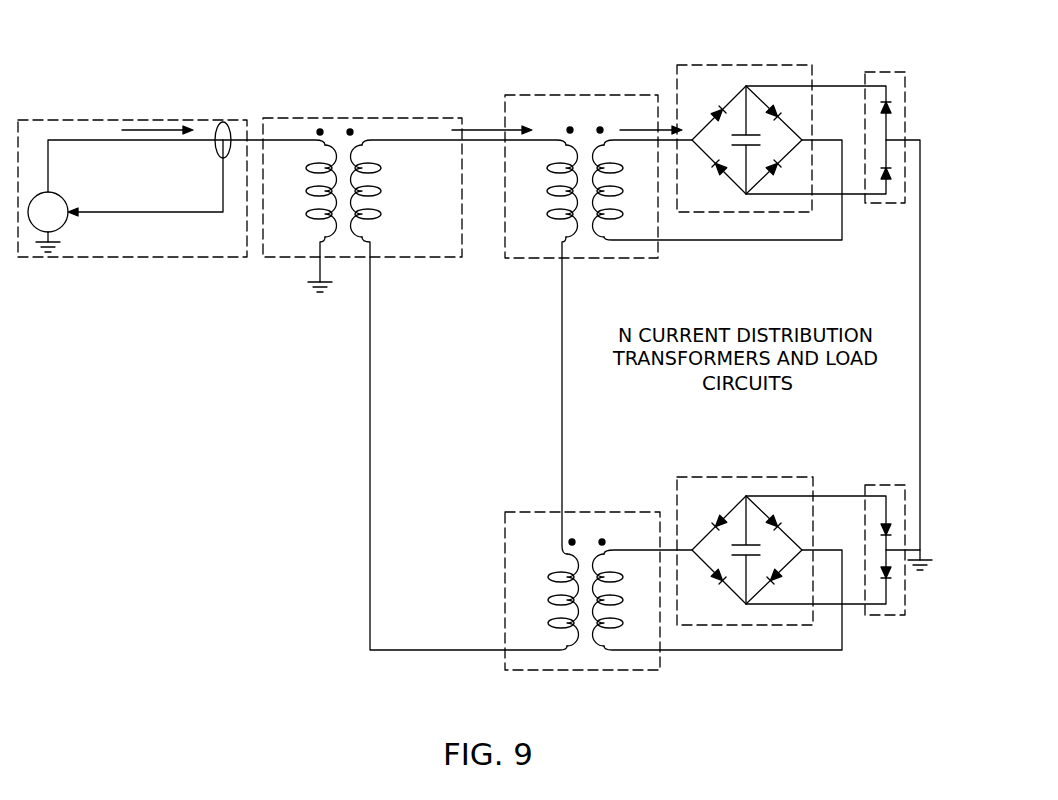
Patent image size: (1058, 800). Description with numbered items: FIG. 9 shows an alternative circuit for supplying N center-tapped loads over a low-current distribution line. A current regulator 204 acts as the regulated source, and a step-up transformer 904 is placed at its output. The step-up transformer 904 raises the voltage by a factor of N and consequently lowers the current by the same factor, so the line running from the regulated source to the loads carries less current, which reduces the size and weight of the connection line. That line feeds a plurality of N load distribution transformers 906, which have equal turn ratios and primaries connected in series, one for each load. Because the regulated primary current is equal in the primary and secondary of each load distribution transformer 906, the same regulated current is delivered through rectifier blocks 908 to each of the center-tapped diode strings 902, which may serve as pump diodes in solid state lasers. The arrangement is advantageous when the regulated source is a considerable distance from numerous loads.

The current regulator 204 is at (74, 118).
The step-up transformer 904 is at (358, 118).
The load distribution transformers 906 is at (580, 95).
The rectifier blocks 908 is at (742, 65).
The center-tapped diode strings 902 is at (882, 72).